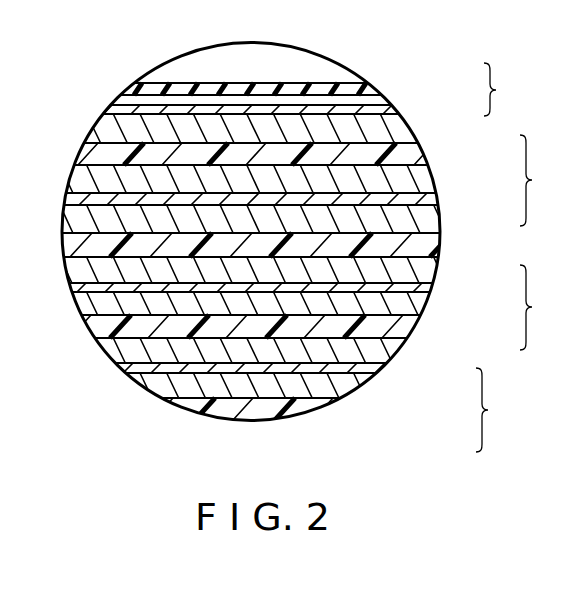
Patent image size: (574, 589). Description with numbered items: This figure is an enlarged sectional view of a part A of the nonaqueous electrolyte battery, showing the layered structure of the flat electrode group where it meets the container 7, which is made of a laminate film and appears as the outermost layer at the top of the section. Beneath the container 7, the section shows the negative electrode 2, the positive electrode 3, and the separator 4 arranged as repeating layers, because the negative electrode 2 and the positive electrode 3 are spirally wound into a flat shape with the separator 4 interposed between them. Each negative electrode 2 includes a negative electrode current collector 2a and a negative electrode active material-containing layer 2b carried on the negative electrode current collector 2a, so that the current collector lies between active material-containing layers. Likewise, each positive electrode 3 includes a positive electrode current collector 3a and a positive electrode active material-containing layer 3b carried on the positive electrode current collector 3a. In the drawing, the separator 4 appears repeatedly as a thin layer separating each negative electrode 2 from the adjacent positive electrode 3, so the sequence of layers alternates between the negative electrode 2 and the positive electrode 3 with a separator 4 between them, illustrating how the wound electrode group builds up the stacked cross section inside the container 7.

The part A is at (161, 75).
The negative electrode 2 is at (515, 206).
The negative electrode current collector 2a is at (412, 94).
The negative electrode active material-containing layer 2b is at (397, 127).
The positive electrode 3 is at (511, 293).
The positive electrode current collector 3a is at (425, 197).
The positive electrode active material-containing layer 3b is at (420, 177).
The separator 4 is at (90, 153).
The container 7 is at (377, 86).